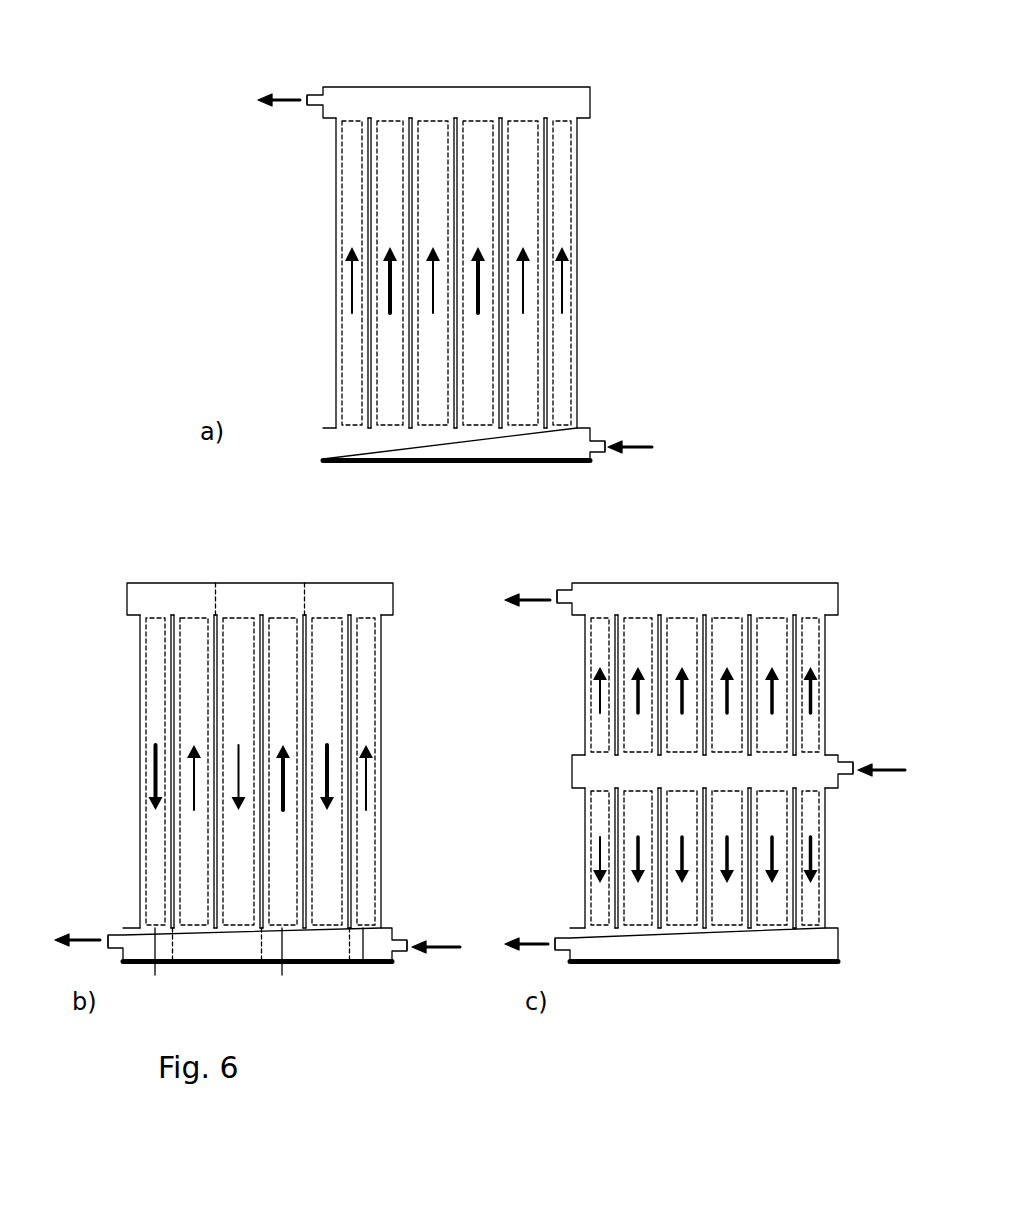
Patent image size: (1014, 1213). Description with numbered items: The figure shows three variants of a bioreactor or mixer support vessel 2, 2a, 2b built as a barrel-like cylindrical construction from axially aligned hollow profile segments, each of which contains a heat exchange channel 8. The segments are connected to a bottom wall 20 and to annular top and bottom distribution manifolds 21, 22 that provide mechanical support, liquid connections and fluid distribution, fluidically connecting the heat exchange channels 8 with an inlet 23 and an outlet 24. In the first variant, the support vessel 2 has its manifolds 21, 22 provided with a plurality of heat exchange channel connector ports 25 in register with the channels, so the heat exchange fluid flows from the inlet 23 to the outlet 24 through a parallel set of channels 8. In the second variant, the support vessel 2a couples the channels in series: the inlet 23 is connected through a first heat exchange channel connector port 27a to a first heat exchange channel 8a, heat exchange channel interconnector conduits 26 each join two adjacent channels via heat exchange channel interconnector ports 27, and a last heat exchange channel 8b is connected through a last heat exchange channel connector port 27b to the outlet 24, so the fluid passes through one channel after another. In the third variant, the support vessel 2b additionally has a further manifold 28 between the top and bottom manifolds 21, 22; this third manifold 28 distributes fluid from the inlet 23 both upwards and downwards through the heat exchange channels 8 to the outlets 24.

The support vessel 2 is at (204, 267).
The support vessel 2a is at (171, 542).
The support vessel 2b is at (789, 512).
The heat exchange channels 8 is at (478, 192).
The first heat exchange channel 8a is at (368, 857).
The last heat exchange channel 8b is at (155, 835).
The bottom wall 20 is at (365, 462).
The top distribution manifold 21 is at (428, 95).
The bottom distribution manifold 22 is at (363, 447).
The inlet 23 is at (606, 443).
The outlet 24 is at (316, 92).
The heat exchange channel connector ports 25 is at (560, 118).
The heat exchange channel interconnector conduits 26 is at (248, 594).
The heat exchange channel interconnector ports 27 is at (365, 612).
The first heat exchange channel connector port 27a is at (362, 930).
The last heat exchange channel connector port 27b is at (156, 973).
The further manifold 28 is at (572, 758).